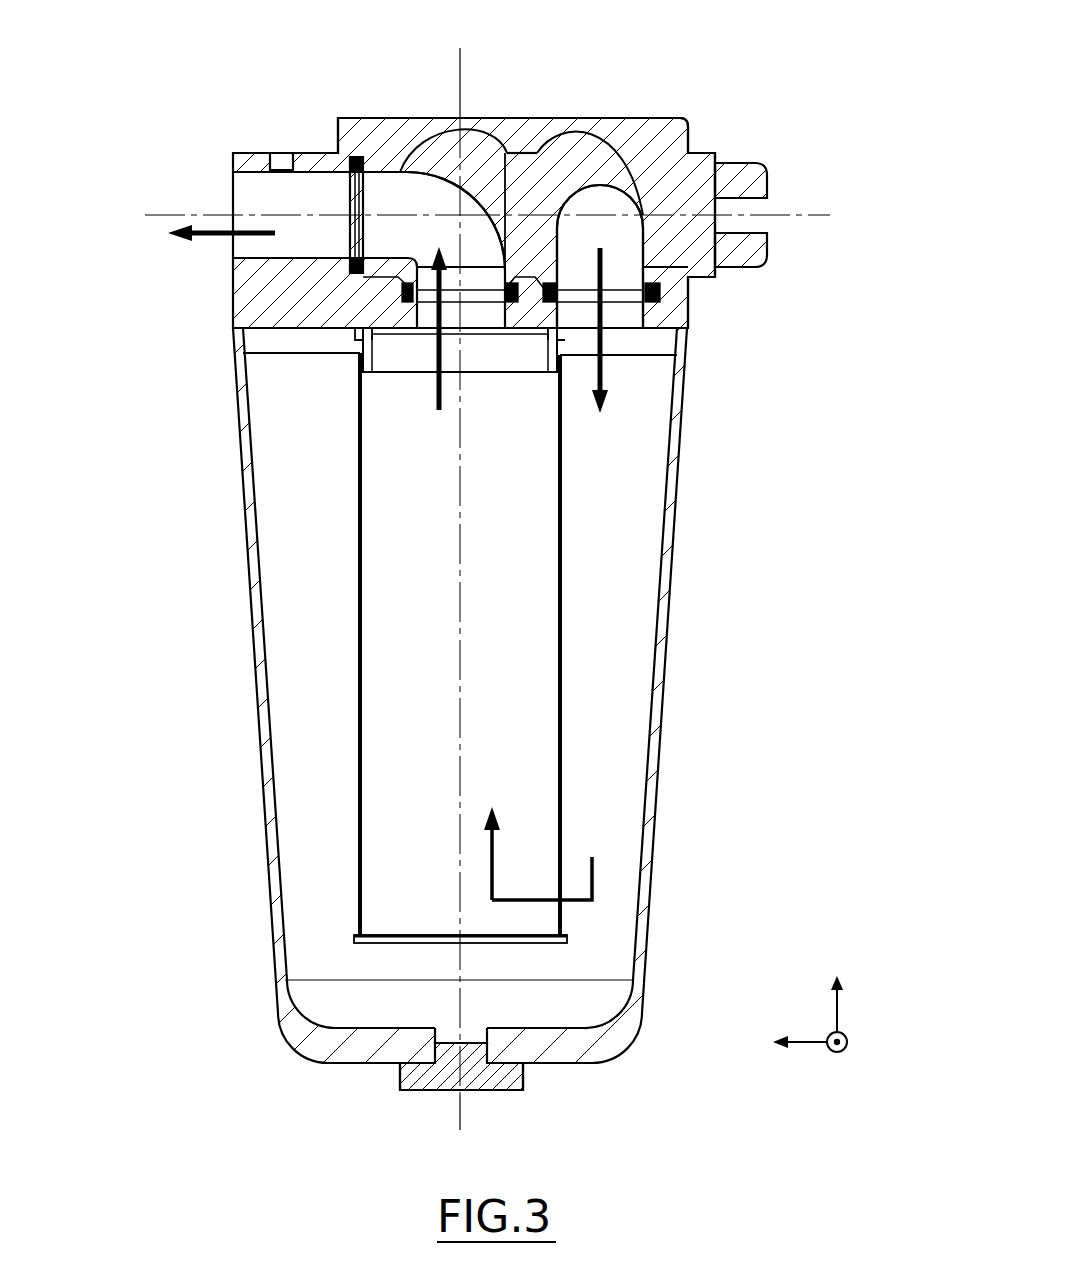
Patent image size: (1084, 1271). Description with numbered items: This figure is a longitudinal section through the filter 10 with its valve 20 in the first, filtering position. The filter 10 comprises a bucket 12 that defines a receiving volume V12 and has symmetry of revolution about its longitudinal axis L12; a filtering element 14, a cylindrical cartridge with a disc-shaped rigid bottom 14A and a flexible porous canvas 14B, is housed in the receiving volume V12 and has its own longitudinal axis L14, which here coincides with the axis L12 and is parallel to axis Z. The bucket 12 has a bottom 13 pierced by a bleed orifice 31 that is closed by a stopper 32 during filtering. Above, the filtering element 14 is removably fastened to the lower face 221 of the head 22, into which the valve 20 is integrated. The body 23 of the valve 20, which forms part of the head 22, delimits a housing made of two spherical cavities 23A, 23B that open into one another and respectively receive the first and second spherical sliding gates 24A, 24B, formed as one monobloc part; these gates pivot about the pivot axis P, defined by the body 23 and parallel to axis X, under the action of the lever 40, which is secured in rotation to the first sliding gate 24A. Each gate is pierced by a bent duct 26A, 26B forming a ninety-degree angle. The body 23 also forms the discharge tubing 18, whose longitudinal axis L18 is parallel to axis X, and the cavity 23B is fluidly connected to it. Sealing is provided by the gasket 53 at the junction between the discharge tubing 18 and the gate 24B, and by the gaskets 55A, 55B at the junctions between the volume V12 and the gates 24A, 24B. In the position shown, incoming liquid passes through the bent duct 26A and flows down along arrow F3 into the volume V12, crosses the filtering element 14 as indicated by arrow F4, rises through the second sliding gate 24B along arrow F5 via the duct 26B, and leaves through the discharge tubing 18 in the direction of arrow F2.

The filter 10 is at (777, 82).
The bucket 12 is at (435, 731).
The bottom 13 is at (352, 1046).
The filtering element 14 is at (360, 637).
The bottom 14A is at (372, 945).
The canvas 14B is at (360, 735).
The liquid product discharge tubing 18 is at (248, 196).
The valve 20 is at (700, 264).
The head 22 is at (709, 123).
The body 23 is at (376, 126).
The spherical cavity 23A is at (760, 222).
The spherical cavity 23B is at (532, 126).
The first spherical sliding gate 24A is at (613, 145).
The second spherical sliding gate 24B is at (480, 142).
The duct 26A is at (632, 244).
The duct 26B is at (430, 197).
The bleed orifice 31 is at (478, 1026).
The stopper 32 is at (502, 1076).
The lever 40 is at (748, 180).
The sealing gasket 53 is at (323, 152).
The sealing gasket 55A is at (660, 301).
The sealing gasket 55B is at (403, 290).
The lower face 221 is at (290, 342).
The longitudinal axis L12 is at (458, 50).
The longitudinal axis L14 is at (460, 1108).
The longitudinal axis L18 is at (170, 214).
The pivot axis P is at (812, 215).
The receiving volume V12 is at (312, 543).
The arrow F2 is at (221, 250).
The arrow F3 is at (613, 330).
The arrow F4 is at (538, 853).
The arrow F5 is at (427, 331).